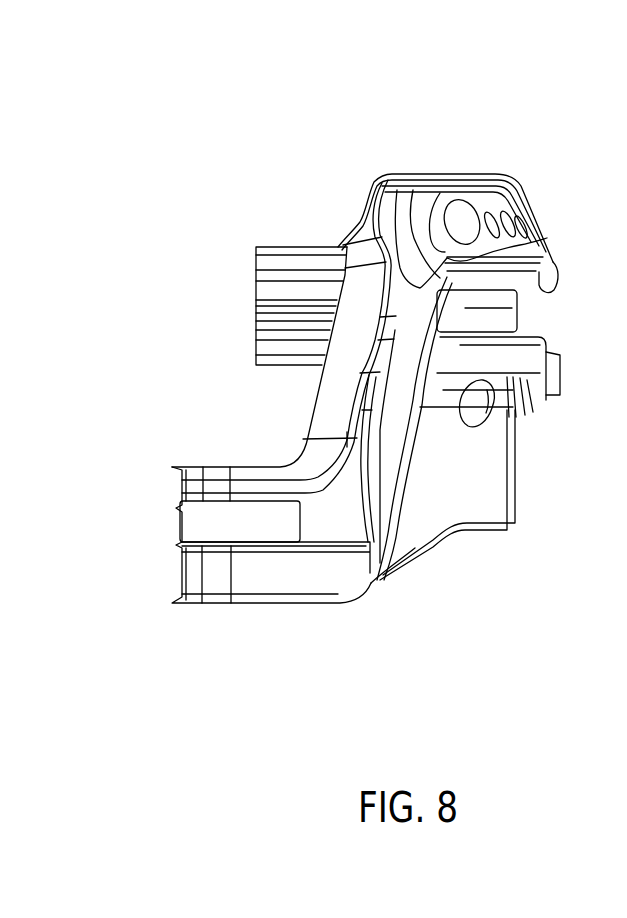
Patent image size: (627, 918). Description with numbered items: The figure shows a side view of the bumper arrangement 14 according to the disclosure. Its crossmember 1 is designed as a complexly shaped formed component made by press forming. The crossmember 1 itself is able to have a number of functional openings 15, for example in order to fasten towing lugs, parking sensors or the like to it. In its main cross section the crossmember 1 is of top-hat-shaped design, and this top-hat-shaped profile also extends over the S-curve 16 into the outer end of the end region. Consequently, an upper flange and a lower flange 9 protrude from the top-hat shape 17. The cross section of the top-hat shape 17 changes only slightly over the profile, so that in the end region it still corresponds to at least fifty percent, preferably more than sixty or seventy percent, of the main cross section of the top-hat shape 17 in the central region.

The crossmember 1 is at (552, 160).
The bumper arrangement 14 is at (298, 162).
The functional openings 15 is at (455, 215).
The S-curve 16 is at (373, 447).
The top-hat shape 17 is at (540, 318).
The lower flange 9 is at (195, 478).